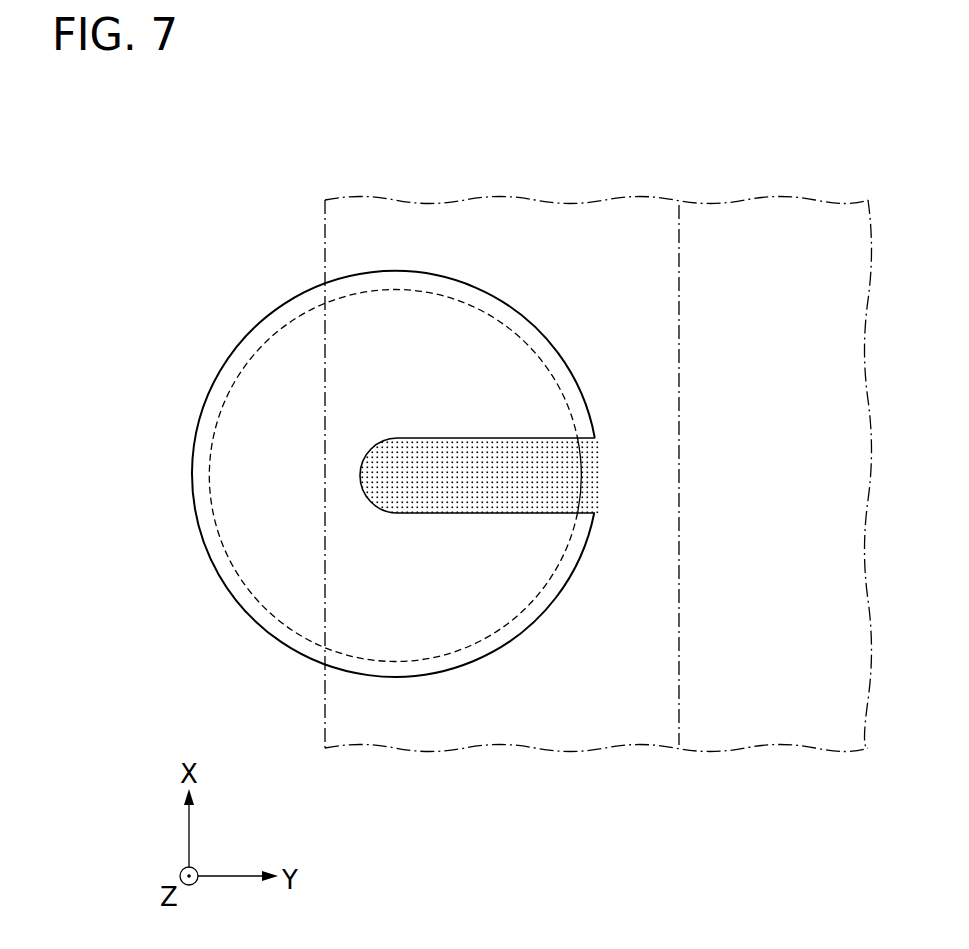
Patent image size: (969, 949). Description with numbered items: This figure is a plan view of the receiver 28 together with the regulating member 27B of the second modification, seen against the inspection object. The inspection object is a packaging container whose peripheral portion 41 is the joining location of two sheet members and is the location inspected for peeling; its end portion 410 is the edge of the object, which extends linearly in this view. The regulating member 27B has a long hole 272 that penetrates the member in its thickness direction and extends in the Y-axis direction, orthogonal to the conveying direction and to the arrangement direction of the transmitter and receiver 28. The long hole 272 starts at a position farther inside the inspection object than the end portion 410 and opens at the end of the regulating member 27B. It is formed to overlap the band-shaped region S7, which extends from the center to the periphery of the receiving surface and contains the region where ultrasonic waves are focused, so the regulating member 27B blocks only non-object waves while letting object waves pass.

The peripheral portion 41 is at (600, 198).
The end portion 410 is at (325, 238).
The regulating member 27B is at (212, 392).
The receiver 28 is at (275, 576).
The long hole 272 is at (458, 513).
The band-shaped region S7 is at (485, 473).